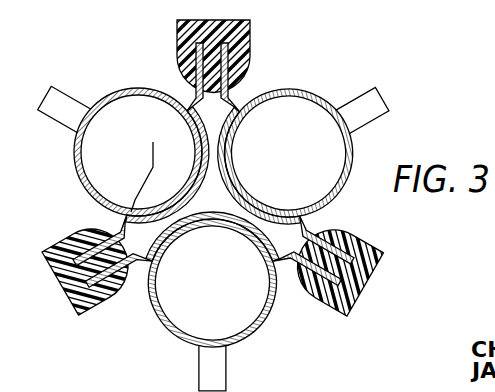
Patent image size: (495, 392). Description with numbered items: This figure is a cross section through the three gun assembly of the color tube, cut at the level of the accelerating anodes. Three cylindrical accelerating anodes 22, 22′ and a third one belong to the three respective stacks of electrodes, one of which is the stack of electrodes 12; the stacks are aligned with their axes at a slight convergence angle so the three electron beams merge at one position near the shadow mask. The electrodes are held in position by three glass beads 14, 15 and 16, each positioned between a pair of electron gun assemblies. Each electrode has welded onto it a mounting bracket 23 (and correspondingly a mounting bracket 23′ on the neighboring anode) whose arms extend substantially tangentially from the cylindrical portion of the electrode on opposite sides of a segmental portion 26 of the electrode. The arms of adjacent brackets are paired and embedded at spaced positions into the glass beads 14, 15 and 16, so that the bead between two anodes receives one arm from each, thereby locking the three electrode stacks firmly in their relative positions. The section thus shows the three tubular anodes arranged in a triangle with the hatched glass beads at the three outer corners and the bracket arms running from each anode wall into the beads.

The stack of electrodes 12 is at (494, 12).
The glass bead 14 is at (77, 306).
The glass bead 15 is at (241, 19).
The glass bead 16 is at (374, 266).
The accelerating anode 22 is at (110, 91).
The accelerating anode 22′ is at (313, 95).
The mounting bracket 23 is at (193, 100).
The mounting bracket 23′ is at (229, 99).
The segmental portion 26 is at (184, 124).